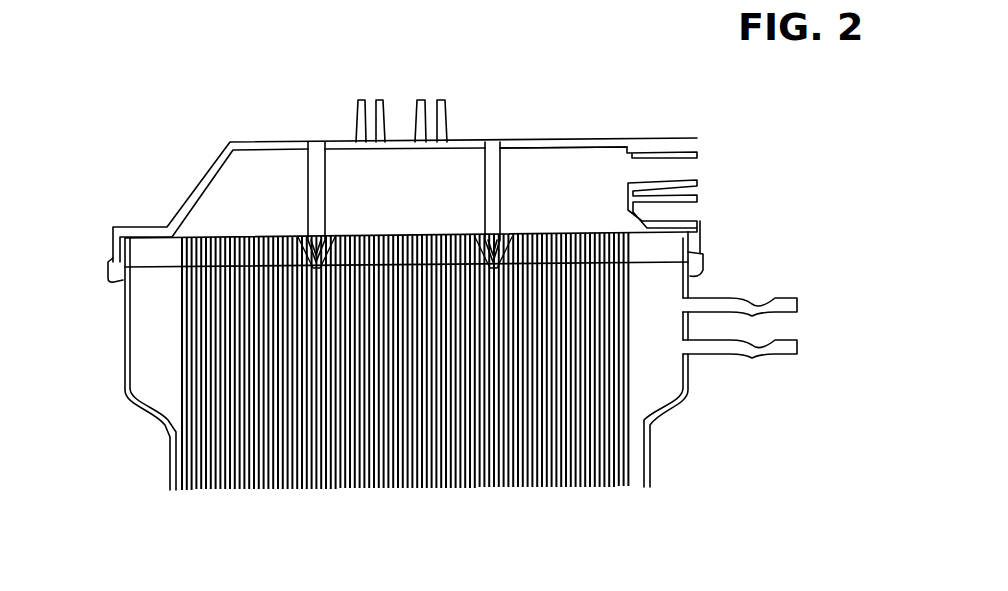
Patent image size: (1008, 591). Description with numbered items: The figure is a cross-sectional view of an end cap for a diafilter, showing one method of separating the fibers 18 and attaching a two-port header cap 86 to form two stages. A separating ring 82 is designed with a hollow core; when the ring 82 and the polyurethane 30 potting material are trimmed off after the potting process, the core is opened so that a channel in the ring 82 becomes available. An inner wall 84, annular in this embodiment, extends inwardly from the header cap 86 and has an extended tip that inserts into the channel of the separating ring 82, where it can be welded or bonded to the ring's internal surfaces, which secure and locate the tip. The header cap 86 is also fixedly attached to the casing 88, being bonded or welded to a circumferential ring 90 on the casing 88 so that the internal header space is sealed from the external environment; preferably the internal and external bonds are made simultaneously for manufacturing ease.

The fibers 18 is at (557, 473).
The polyurethane 30 is at (665, 252).
The separating ring 82 is at (338, 240).
The inner wall 84 is at (495, 223).
The header cap 86 is at (200, 187).
The casing 88 is at (128, 390).
The circumferential ring 90 is at (112, 263).